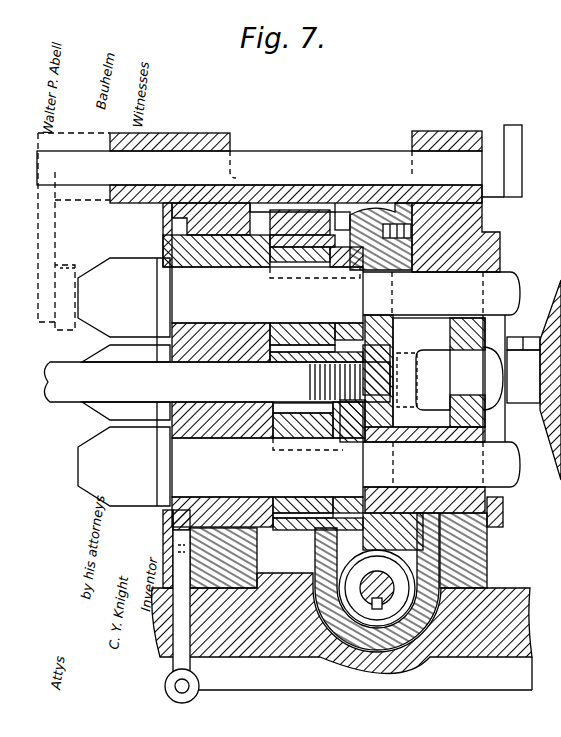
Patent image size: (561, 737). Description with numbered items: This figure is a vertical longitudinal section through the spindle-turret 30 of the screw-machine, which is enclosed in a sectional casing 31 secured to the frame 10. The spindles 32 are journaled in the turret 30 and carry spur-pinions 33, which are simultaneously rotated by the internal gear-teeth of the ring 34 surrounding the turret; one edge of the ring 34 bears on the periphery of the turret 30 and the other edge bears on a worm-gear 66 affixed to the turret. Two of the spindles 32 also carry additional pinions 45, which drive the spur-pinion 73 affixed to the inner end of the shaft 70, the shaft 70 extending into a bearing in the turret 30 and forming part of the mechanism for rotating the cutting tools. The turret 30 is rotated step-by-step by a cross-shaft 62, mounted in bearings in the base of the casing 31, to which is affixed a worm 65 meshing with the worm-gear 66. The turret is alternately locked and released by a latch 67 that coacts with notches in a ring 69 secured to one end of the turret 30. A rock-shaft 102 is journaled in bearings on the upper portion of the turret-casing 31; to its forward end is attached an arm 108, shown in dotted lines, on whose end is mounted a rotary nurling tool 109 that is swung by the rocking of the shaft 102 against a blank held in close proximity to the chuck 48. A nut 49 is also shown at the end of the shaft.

The rock-shaft 102 is at (350, 152).
The frame 10 is at (522, 128).
The arm 108 is at (48, 217).
The rotary nurling tool 109 is at (75, 248).
The sectional casing 31 is at (307, 183).
The spindle-turret 30 is at (233, 237).
The ring 69 is at (163, 220).
The ring 34 is at (285, 205).
The worm-gear 66 is at (368, 215).
The nut 49 is at (558, 438).
The spur-pinions 33 is at (295, 335).
The spindles 32 is at (518, 278).
The additional pinions 45 is at (348, 262).
The spur-pinion 73 is at (360, 350).
The chuck 48 is at (105, 322).
The shaft 70 is at (217, 382).
The latch 67 is at (185, 630).
The cross-shaft 62 is at (388, 600).
The worm 65 is at (357, 600).